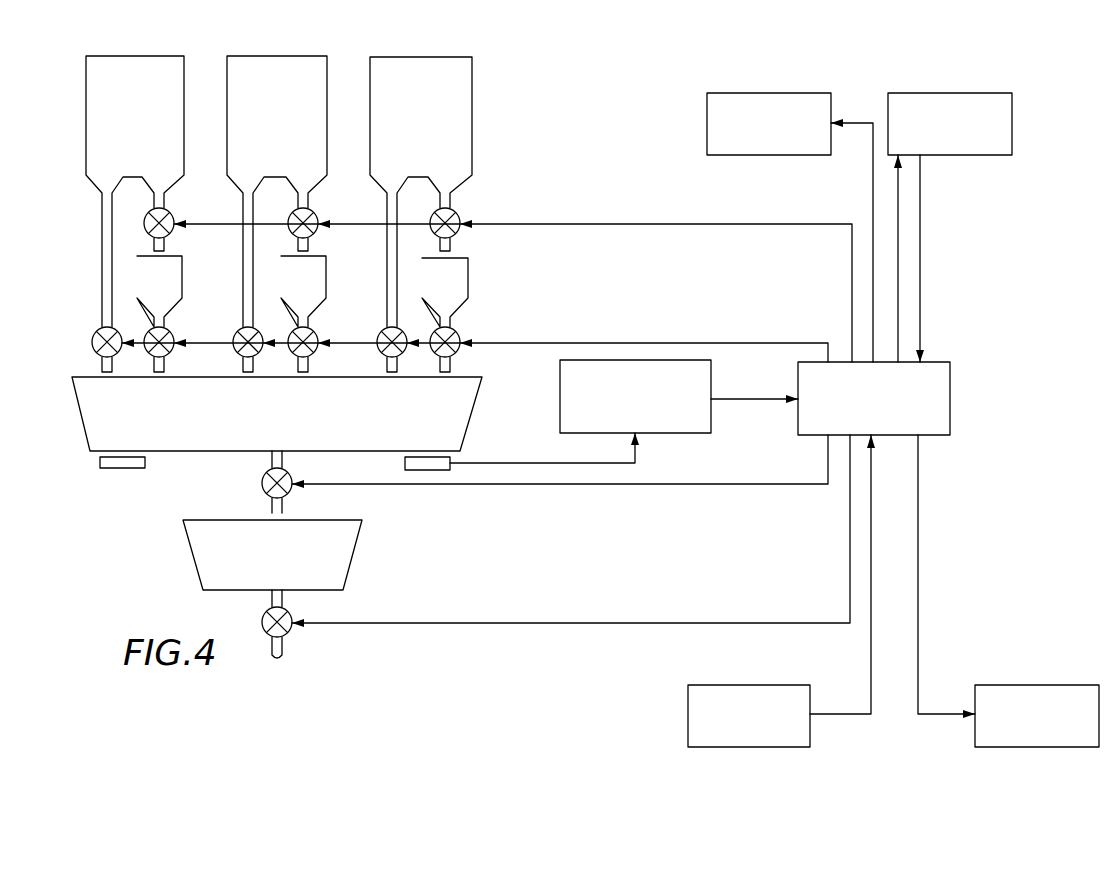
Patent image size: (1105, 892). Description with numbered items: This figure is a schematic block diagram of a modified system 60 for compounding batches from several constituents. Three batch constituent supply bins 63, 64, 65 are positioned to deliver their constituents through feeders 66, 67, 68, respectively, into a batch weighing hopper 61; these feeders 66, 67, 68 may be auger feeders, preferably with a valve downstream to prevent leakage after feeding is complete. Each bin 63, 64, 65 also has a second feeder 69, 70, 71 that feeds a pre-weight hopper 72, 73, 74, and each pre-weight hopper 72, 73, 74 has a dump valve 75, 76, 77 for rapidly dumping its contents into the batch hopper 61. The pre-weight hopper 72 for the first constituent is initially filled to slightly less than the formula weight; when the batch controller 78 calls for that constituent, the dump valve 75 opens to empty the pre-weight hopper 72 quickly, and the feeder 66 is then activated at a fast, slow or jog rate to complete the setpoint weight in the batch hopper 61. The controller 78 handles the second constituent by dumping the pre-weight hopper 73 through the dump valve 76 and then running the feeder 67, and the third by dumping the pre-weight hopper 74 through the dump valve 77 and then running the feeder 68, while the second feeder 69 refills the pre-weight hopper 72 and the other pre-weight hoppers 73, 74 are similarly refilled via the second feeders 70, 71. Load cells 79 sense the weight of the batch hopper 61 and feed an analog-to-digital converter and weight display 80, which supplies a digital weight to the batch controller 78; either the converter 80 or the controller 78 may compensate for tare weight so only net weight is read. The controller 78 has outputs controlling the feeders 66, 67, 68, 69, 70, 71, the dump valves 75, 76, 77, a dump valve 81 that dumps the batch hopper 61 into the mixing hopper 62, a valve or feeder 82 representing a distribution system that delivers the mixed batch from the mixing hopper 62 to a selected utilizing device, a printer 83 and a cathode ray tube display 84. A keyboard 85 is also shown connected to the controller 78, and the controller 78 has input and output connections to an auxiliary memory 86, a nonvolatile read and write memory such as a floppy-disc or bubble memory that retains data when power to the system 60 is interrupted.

The modified system 60 is at (443, 634).
The batch weighing hopper 61 is at (79, 415).
The mixing hopper 62 is at (358, 540).
The batch constituent supply bin 63 is at (163, 52).
The batch constituent supply bin 64 is at (303, 52).
The batch constituent supply bin 65 is at (445, 52).
The feeder 66 is at (93, 350).
The feeder 67 is at (237, 351).
The feeder 68 is at (380, 351).
The second feeder 69 is at (170, 213).
The second feeder 70 is at (314, 213).
The second feeder 71 is at (456, 213).
The pre-weight hopper 72 is at (182, 268).
The pre-weight hopper 73 is at (326, 268).
The pre-weight hopper 74 is at (468, 268).
The dump valve 75 is at (167, 332).
The dump valve 76 is at (311, 332).
The dump valve 77 is at (453, 332).
The batch controller 78 is at (950, 376).
The load cell 79 is at (405, 461).
The analog-to-digital converter and weight display 80 is at (560, 392).
The dump valve 81 is at (262, 481).
The valve or feeder 82 is at (291, 630).
The printer 83 is at (776, 91).
The cathode ray tube display 84 is at (1050, 684).
The keyboard 85 is at (760, 684).
The auxiliary memory 86 is at (962, 91).